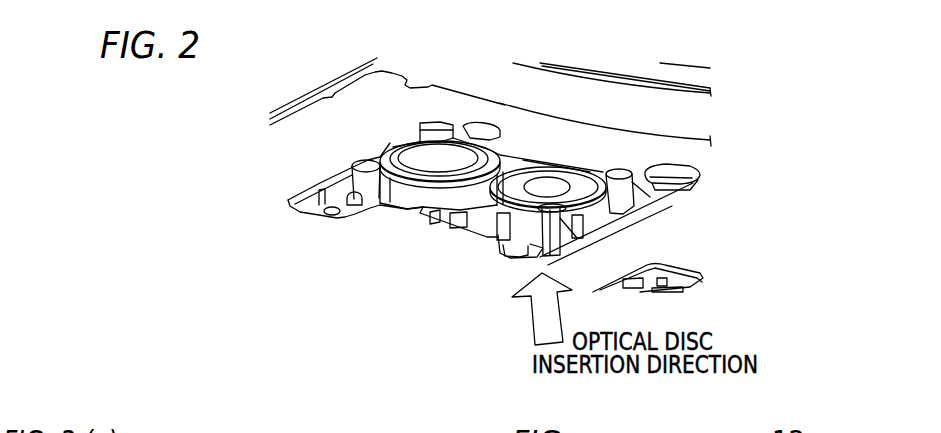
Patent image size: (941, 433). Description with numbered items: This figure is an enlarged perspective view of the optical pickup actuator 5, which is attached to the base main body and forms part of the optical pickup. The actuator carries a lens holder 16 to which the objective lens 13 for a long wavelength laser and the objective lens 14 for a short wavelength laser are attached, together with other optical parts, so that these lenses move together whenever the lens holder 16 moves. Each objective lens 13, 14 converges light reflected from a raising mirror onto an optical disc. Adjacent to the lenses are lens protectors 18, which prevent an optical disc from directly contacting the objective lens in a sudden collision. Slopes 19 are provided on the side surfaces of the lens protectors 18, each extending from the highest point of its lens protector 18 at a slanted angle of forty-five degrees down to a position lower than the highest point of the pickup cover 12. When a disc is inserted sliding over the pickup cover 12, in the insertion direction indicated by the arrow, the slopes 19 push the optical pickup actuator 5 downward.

The optical pickup actuator 5 is at (253, 76).
The pickup cover 12 is at (573, 137).
The objective lens for a long wavelength laser 13 is at (437, 147).
The objective lens for a short wavelength laser 14 is at (546, 196).
The lens holder 16 is at (423, 188).
The lens protectors 18 is at (632, 199).
The slopes 19 is at (605, 226).